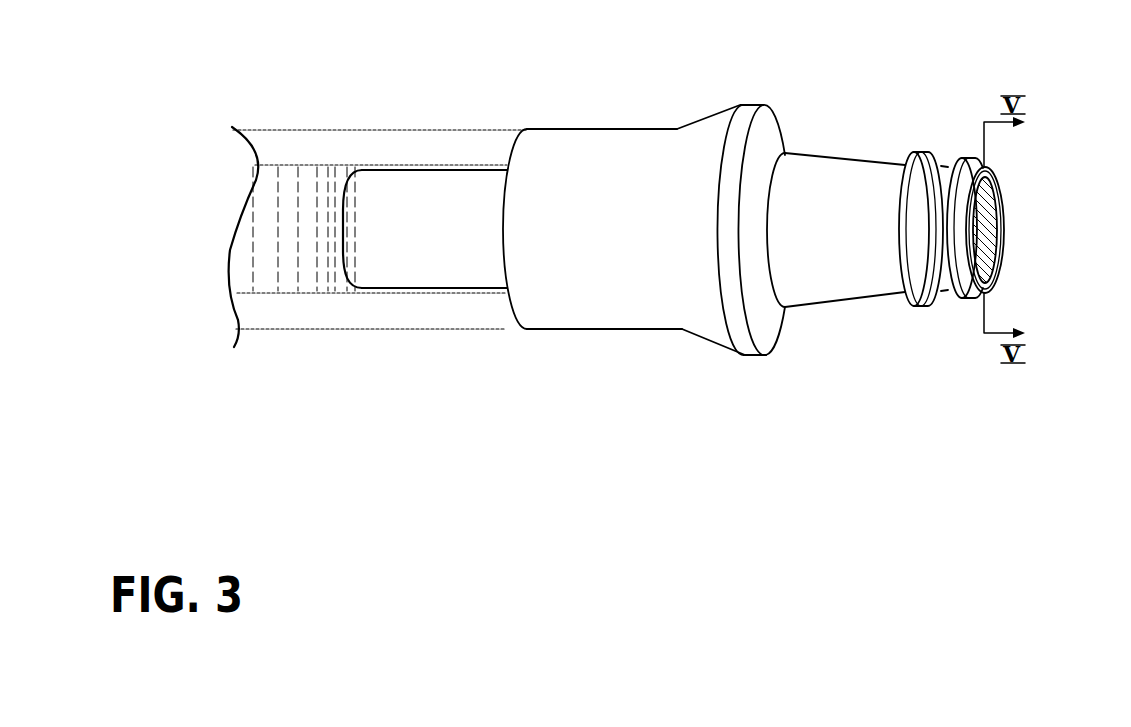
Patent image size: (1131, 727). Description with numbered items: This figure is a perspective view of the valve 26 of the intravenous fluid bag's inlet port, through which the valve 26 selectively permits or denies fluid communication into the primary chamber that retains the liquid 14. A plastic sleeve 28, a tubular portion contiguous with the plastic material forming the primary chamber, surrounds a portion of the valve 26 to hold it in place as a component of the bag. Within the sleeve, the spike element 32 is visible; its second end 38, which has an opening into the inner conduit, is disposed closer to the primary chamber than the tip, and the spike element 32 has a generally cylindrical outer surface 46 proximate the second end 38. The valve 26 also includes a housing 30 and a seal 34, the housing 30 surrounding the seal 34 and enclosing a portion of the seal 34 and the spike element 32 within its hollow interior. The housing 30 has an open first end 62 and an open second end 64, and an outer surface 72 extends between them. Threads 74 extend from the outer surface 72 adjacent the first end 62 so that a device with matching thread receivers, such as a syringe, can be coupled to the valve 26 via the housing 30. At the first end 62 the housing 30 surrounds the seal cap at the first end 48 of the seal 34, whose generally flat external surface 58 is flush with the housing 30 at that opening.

The liquid 14 is at (302, 260).
The plastic sleeve 28 is at (293, 145).
The second end 38 is at (348, 176).
The outer surface 46 is at (400, 208).
The spike element 32 is at (412, 296).
The valve 26 is at (600, 120).
The second end 64 is at (508, 317).
The housing 30 is at (710, 103).
The outer surface 72 is at (870, 262).
The threads 74 is at (955, 158).
The first end 48 is at (1016, 253).
The first end 62 is at (994, 291).
The seal 34 is at (985, 203).
The external surface 58 is at (986, 226).